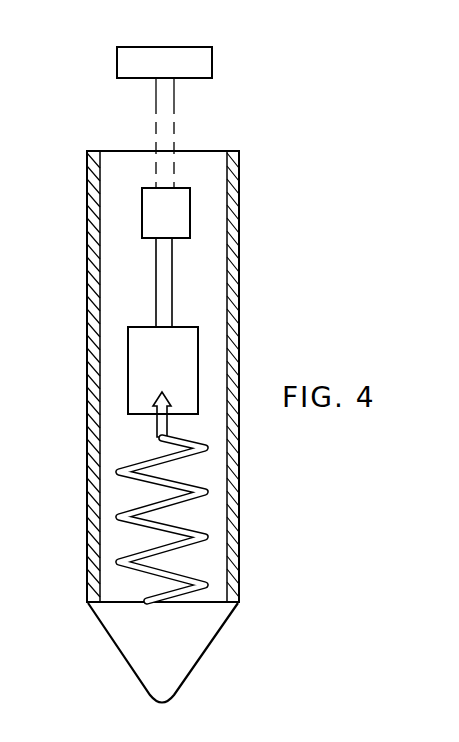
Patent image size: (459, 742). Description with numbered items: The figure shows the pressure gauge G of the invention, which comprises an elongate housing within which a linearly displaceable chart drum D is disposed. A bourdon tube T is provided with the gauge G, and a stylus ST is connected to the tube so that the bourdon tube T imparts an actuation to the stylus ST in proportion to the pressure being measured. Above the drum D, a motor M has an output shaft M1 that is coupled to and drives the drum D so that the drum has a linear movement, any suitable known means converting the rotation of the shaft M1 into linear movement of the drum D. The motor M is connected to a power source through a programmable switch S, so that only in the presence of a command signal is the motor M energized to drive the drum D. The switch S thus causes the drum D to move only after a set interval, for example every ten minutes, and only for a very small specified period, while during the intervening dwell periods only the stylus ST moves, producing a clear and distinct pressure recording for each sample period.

The programmable switch S is at (135, 50).
The motor M is at (142, 204).
The output shaft M1 is at (172, 284).
The chart drum D is at (198, 330).
The stylus ST is at (160, 395).
The bourdon tube T is at (188, 488).
The gauge G is at (73, 313).